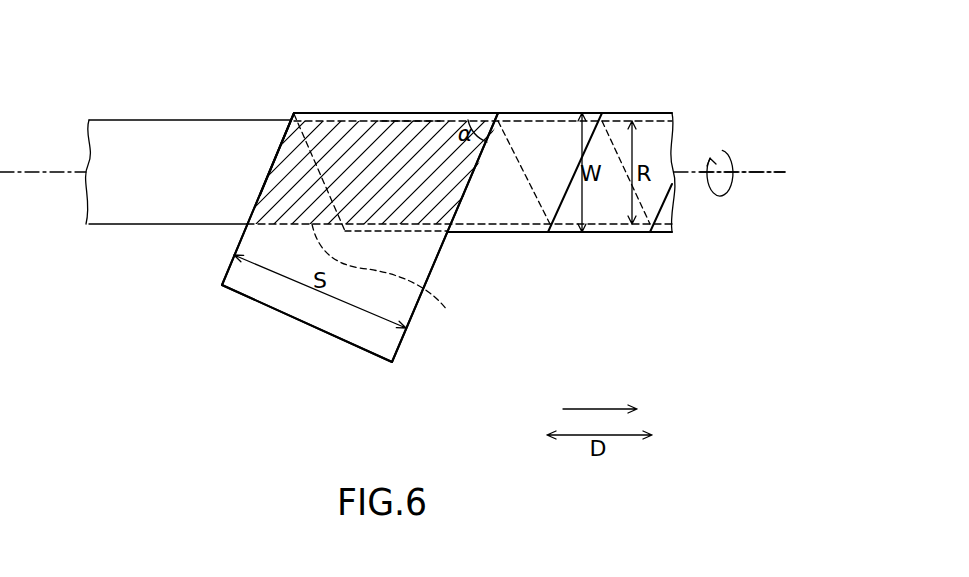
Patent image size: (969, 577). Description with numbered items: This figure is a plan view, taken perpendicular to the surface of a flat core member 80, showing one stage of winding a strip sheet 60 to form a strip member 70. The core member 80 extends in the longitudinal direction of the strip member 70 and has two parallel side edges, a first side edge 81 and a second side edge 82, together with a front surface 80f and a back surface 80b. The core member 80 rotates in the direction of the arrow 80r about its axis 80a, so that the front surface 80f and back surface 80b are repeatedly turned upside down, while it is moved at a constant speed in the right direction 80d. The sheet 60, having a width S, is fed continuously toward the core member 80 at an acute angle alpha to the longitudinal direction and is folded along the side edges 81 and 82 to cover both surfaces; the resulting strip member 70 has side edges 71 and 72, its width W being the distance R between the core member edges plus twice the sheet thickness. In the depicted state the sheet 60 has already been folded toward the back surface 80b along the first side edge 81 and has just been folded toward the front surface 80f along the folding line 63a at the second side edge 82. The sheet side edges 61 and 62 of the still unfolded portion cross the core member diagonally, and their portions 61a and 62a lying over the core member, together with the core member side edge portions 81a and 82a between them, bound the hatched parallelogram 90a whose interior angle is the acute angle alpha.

The core member 80 is at (113, 118).
The first side edge of core member 81 is at (108, 226).
The second side edge of core member 82 is at (152, 119).
The front surface 80f is at (200, 155).
The back surface 80b is at (247, 152).
The core member side edge portion 81a is at (393, 283).
The core member side edge portion 82a is at (386, 113).
The folding line 63a is at (335, 113).
The parallelogram 90a is at (410, 158).
The strip member 70 is at (543, 137).
The side edge of strip member 71 is at (570, 232).
The side edge of strip member 72 is at (628, 112).
The strip sheet 60 is at (336, 337).
The sheet side edge 61 is at (405, 348).
The cutting edge 61a is at (470, 190).
The sheet side edge 62 is at (229, 268).
The back edge of blade 62a is at (263, 177).
The arrow indicating rotation direction 80r is at (714, 153).
The axis of core member 80a is at (748, 176).
The right direction 80d is at (600, 408).